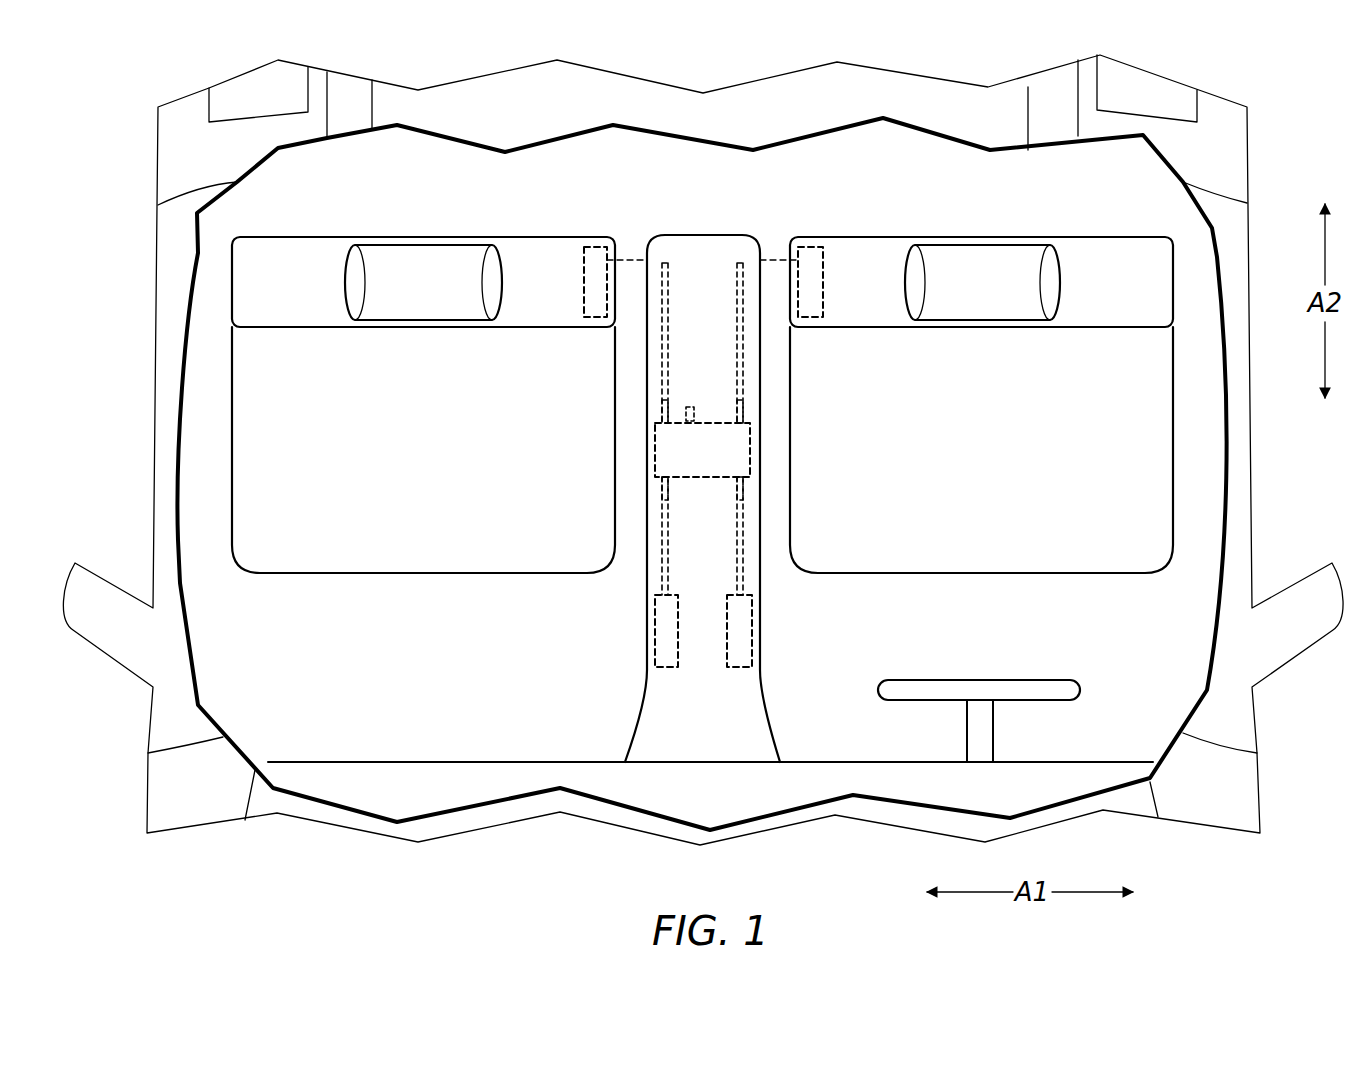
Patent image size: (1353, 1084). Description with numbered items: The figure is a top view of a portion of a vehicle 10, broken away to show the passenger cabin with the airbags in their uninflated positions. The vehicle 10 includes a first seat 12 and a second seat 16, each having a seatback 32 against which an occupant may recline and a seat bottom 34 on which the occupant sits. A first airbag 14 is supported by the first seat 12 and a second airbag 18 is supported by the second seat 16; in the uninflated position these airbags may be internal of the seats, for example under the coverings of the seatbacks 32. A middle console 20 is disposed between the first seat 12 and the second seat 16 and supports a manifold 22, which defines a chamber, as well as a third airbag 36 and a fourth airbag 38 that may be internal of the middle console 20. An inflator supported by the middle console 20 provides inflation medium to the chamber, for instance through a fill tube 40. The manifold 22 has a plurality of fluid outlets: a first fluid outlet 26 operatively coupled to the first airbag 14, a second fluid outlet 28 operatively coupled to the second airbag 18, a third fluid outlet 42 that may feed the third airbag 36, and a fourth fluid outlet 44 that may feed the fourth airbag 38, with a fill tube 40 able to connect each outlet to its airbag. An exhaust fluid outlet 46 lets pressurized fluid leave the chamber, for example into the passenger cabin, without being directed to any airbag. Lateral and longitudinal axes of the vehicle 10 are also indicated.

The vehicle 10 is at (98, 122).
The first seat 12 is at (1060, 212).
The first airbag 14 is at (823, 265).
The second seat 16 is at (381, 212).
The second airbag 18 is at (584, 265).
The middle console 20 is at (690, 235).
The manifold 22 is at (710, 453).
The first fluid outlet 26 is at (743, 420).
The second fluid outlet 28 is at (662, 420).
The seatback 32 is at (292, 237).
The seat bottom 34 is at (328, 575).
The third airbag 36 is at (762, 640).
The fourth airbag 38 is at (645, 640).
The fill tube 40 is at (660, 385).
The third fluid outlet 42 is at (743, 480).
The fourth fluid outlet 44 is at (662, 480).
The exhaust fluid outlet 46 is at (690, 408).